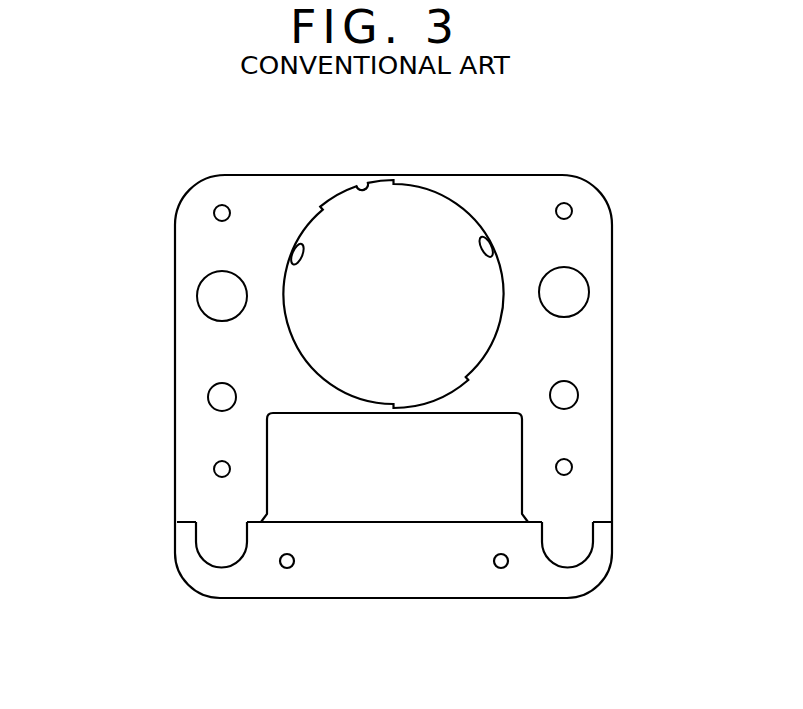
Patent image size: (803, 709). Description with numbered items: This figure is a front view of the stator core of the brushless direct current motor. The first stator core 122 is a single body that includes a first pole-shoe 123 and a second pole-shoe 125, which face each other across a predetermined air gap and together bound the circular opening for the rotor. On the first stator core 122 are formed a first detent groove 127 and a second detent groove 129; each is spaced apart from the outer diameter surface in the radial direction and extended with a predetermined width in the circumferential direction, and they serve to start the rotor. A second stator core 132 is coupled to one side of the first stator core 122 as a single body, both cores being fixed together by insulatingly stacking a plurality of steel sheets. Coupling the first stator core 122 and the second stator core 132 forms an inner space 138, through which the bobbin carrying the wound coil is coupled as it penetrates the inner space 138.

The first stator core 122 is at (178, 176).
The first pole-shoe 123 is at (300, 237).
The second pole-shoe 125 is at (482, 233).
The first detent groove 127 is at (362, 182).
The second detent groove 129 is at (450, 395).
The inner space 138 is at (476, 465).
The second stator core 132 is at (386, 598).